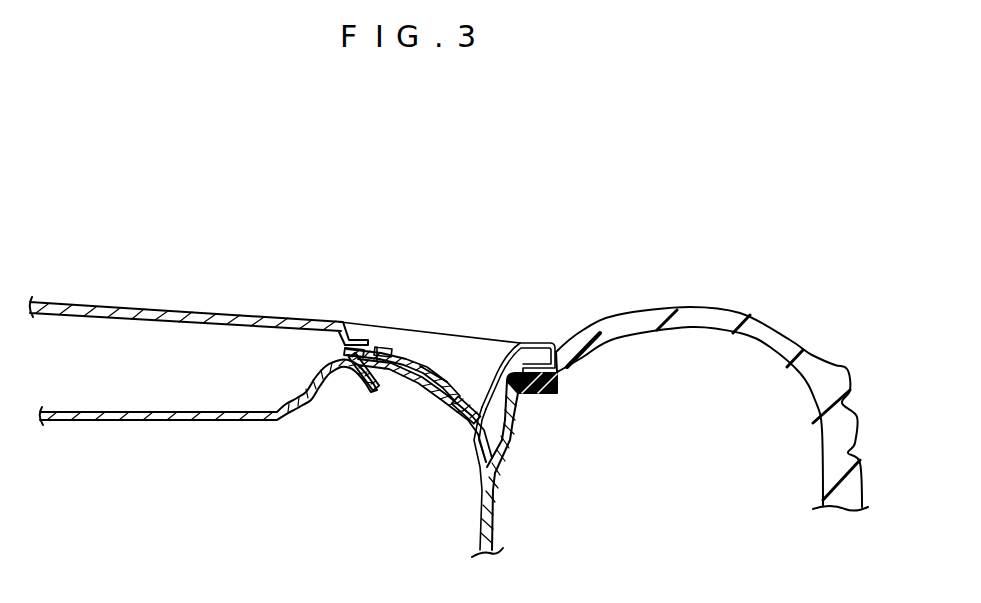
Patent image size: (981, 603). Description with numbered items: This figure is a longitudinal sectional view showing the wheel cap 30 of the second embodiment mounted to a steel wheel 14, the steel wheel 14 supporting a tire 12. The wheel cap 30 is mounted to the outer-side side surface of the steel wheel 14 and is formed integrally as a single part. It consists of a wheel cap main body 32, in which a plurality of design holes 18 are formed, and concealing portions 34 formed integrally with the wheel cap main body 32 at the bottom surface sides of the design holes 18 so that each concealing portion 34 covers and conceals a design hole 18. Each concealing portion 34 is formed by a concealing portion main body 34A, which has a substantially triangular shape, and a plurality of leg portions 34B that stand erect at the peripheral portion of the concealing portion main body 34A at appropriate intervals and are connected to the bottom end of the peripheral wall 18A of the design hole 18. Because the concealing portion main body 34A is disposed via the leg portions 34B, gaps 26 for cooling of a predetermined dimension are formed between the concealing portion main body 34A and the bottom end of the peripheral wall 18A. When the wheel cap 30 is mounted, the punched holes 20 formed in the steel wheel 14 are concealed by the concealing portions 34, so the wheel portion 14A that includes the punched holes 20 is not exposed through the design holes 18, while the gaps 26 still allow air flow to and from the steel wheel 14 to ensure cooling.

The tire 12 is at (703, 318).
The steel wheel 14 is at (510, 522).
The wheel portion 14A is at (392, 345).
The design hole 18 is at (467, 362).
The peripheral wall 18A is at (495, 352).
The punched hole 20 is at (377, 392).
The gap for cooling 26 is at (405, 352).
The wheel cap 30 is at (215, 263).
The wheel cap main body 32 is at (263, 300).
The concealing portion 34 is at (409, 373).
The concealing portion main body 34A is at (437, 375).
The leg portion 34B is at (350, 358).